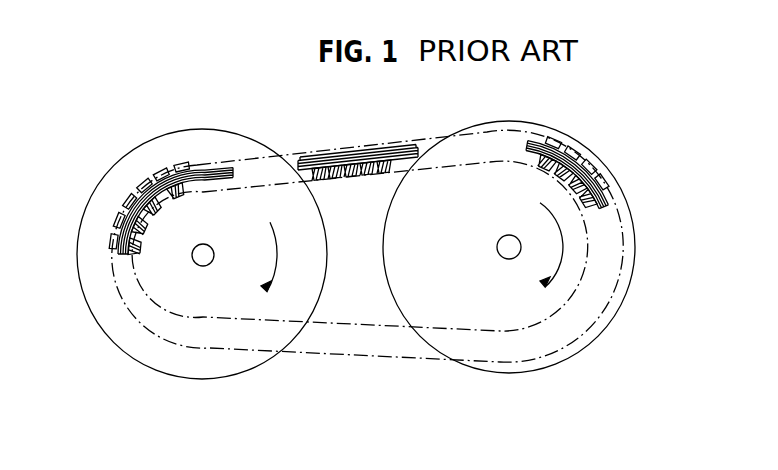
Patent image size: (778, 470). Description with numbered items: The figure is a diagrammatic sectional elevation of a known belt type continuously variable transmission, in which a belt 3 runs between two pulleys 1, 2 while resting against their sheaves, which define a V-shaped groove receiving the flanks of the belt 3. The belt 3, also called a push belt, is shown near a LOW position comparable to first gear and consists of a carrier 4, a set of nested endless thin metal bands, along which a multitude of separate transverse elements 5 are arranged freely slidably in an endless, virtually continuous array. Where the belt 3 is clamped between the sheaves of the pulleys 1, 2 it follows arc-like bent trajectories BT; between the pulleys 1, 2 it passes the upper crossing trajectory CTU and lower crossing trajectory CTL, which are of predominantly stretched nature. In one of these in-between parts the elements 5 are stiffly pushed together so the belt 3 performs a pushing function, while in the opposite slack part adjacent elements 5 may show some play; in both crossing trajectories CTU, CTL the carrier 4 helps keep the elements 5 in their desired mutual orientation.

The pulley 1 is at (142, 160).
The pulley 2 is at (503, 123).
The belt 3 is at (350, 139).
The carrier 4 is at (609, 200).
The transverse elements 5 is at (183, 203).
The upper crossing trajectory CTU is at (413, 132).
The lower crossing trajectory CTL is at (356, 357).
The bent trajectory BT is at (100, 281).